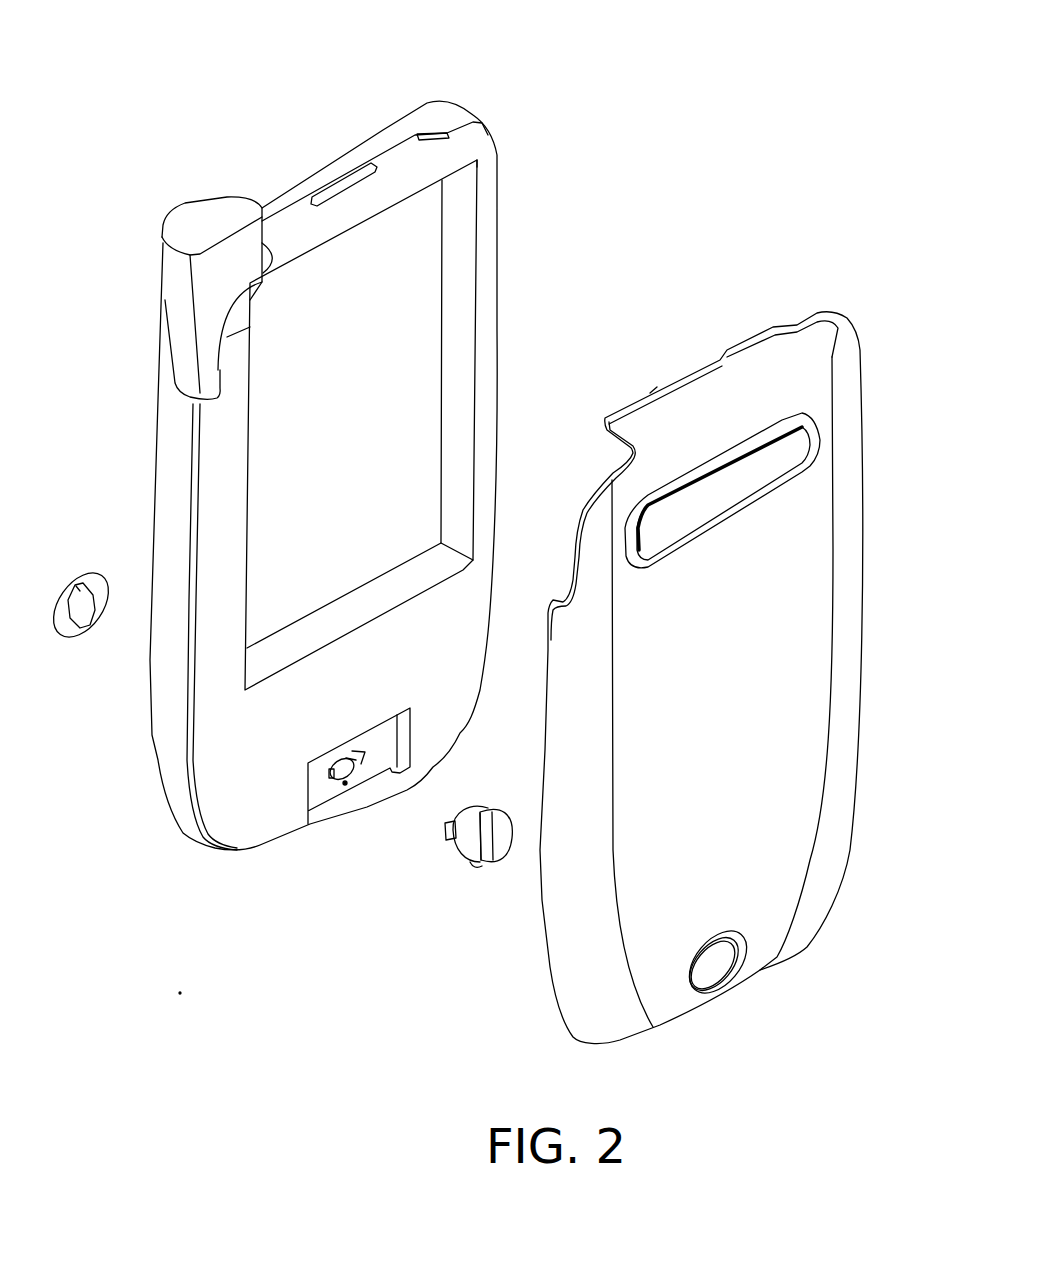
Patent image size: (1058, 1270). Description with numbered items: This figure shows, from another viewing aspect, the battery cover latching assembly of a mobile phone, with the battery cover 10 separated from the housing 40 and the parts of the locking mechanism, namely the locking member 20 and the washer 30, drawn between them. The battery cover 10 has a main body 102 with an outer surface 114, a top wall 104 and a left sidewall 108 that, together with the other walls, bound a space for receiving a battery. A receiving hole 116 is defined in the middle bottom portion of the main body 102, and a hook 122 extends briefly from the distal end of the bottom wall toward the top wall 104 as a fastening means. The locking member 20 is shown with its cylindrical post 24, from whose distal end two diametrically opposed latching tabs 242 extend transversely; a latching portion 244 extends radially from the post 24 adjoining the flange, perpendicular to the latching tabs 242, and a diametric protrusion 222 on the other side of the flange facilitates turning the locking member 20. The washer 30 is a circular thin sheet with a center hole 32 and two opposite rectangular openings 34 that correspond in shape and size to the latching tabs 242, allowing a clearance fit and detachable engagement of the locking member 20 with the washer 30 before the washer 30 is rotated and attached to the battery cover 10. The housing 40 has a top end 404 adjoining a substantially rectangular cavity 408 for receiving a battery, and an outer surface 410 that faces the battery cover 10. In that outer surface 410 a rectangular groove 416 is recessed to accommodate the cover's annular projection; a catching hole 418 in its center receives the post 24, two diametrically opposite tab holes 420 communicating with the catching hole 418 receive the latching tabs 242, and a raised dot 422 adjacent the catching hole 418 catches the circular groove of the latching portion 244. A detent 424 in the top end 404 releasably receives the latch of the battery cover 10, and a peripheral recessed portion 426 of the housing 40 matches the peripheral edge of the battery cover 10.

The battery cover 10 is at (709, 649).
The locking member 20 is at (475, 855).
The cylindrical post 24 is at (467, 817).
The washer 30 is at (73, 591).
The center hole 32 is at (82, 607).
The rectangular openings 34 is at (77, 585).
The housing 40 is at (329, 494).
The main body 102 is at (794, 591).
The top wall 104 is at (780, 330).
The left sidewall 108 is at (583, 988).
The outer surface 114 is at (800, 780).
The receiving hole 116 is at (720, 953).
The hook 122 is at (710, 985).
The protrusion 222 is at (500, 847).
The latching tabs 242 is at (446, 822).
The latching portion 244 is at (481, 865).
The top end 404 is at (452, 117).
The cavity 408 is at (400, 283).
The outer surface 410 is at (430, 680).
The rectangular groove 416 is at (317, 792).
The catching hole 418 is at (349, 781).
The tab holes 420 is at (336, 780).
The raised dot 422 is at (348, 785).
The detent 424 is at (323, 195).
The peripheral recessed portion 426 is at (192, 460).